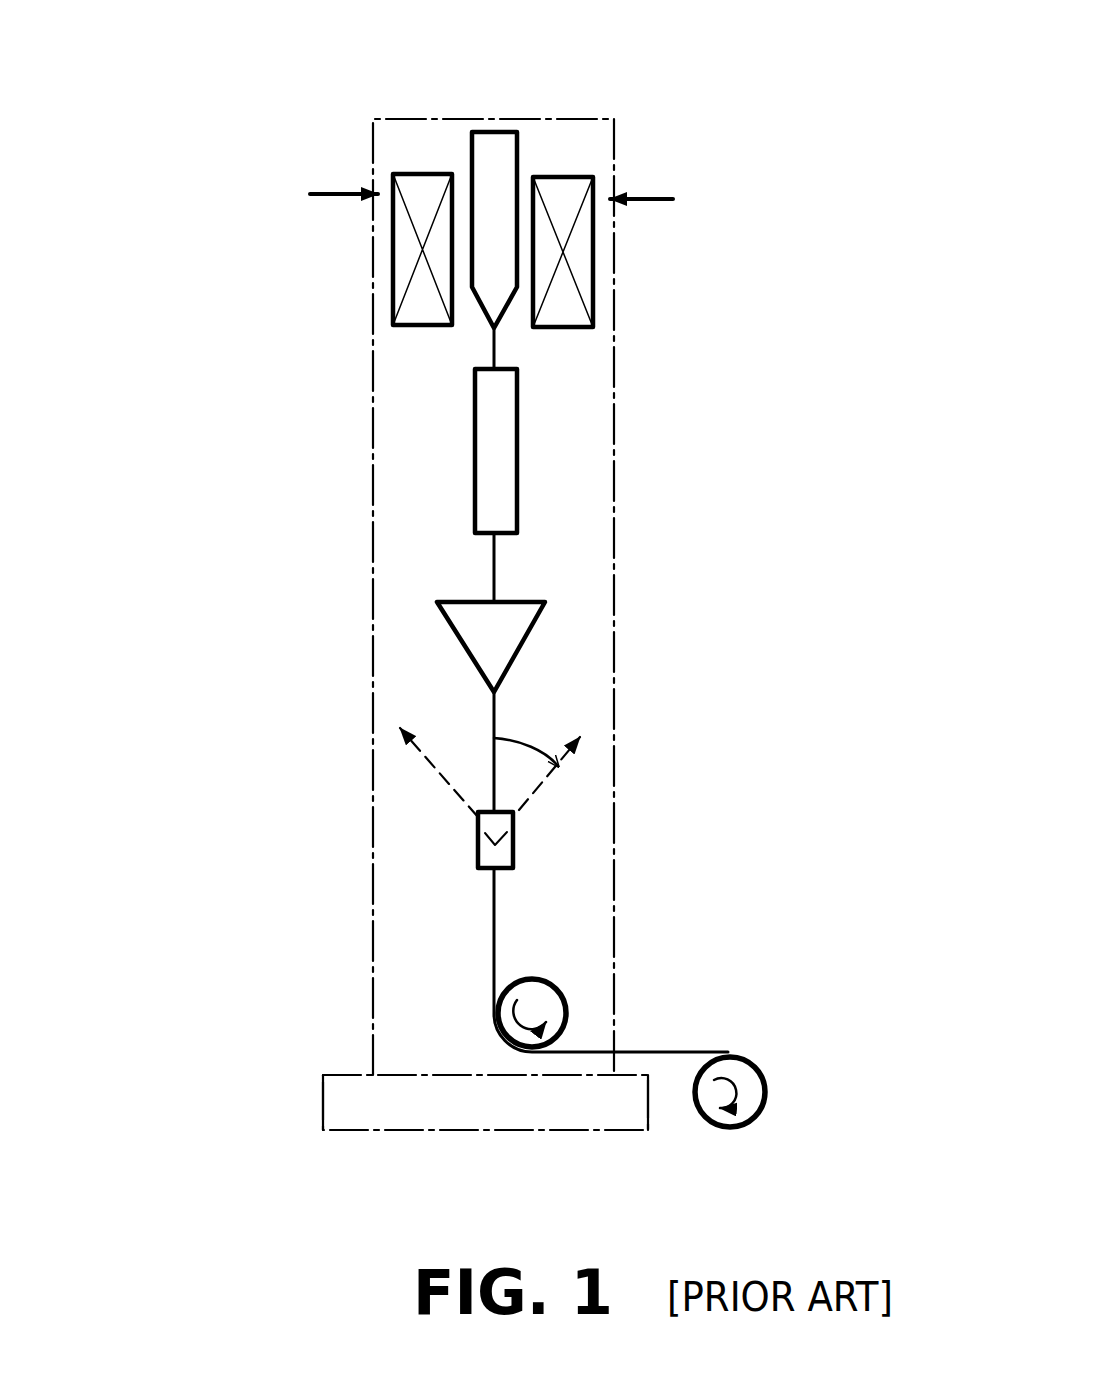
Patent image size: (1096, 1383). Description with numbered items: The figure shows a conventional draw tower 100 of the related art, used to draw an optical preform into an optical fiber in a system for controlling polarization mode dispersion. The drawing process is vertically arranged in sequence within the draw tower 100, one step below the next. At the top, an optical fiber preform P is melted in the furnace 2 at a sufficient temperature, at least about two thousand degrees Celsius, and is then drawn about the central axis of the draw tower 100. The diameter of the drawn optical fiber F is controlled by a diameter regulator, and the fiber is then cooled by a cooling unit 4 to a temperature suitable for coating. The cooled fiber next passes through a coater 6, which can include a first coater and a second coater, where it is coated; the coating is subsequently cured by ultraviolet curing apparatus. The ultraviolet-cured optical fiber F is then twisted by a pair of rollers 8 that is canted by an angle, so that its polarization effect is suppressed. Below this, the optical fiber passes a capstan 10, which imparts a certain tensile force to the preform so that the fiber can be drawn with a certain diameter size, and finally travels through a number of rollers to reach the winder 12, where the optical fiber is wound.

The draw tower 100 is at (373, 940).
The optical fiber preform P is at (497, 157).
The heater 2 is at (577, 248).
The cooling unit 4 is at (493, 457).
The optical fiber F is at (493, 570).
The coater 6 is at (515, 623).
The pair of rollers 8 is at (503, 853).
The capstan 10 is at (542, 1013).
The winder 12 is at (730, 1070).